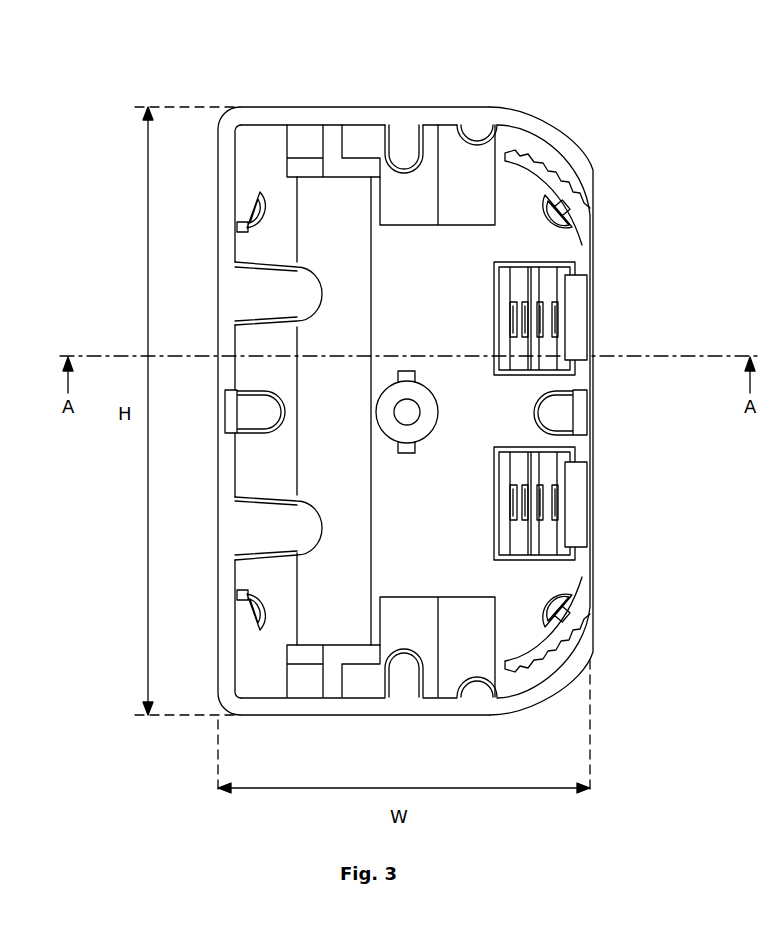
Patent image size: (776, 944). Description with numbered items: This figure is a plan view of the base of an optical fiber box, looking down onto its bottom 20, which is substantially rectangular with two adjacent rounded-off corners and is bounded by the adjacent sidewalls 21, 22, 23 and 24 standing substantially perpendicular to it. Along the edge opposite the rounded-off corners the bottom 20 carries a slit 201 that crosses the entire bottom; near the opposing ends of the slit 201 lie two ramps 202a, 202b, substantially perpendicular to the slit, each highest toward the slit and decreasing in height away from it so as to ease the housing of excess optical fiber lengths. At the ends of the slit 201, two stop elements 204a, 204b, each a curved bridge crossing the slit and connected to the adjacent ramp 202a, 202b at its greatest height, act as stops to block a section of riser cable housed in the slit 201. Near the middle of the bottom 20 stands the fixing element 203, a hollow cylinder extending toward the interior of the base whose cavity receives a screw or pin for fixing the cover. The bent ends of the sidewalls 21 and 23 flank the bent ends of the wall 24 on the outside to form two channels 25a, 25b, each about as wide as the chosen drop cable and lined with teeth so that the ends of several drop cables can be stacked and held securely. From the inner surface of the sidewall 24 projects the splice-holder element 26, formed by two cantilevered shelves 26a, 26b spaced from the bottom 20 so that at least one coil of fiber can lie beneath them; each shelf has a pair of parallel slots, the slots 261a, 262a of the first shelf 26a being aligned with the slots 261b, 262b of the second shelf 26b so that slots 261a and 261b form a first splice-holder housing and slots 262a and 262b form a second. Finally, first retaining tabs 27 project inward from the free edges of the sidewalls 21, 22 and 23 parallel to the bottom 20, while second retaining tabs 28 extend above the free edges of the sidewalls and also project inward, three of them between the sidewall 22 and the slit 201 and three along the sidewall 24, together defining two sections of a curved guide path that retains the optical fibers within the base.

The bottom 20 is at (408, 502).
The sidewall 21 is at (305, 107).
The sidewall 22 is at (229, 487).
The sidewall 23 is at (490, 715).
The sidewall 24 is at (593, 330).
The channel 25a is at (605, 228).
The channel 25b is at (600, 590).
The splice-holder element 26 is at (605, 478).
The shelf 26a is at (506, 310).
The shelf 26b is at (506, 485).
The first retaining tab 27 is at (477, 128).
The second retaining tab 28 is at (255, 210).
The slit 201 is at (354, 442).
The ramp 202a is at (410, 225).
The ramp 202b is at (415, 597).
The fixing element 203 is at (395, 385).
The stop element 204a is at (355, 158).
The stop element 204b is at (289, 700).
The slot 261a is at (510, 290).
The slot 261b is at (510, 467).
The slot 262a is at (557, 291).
The slot 262b is at (557, 545).